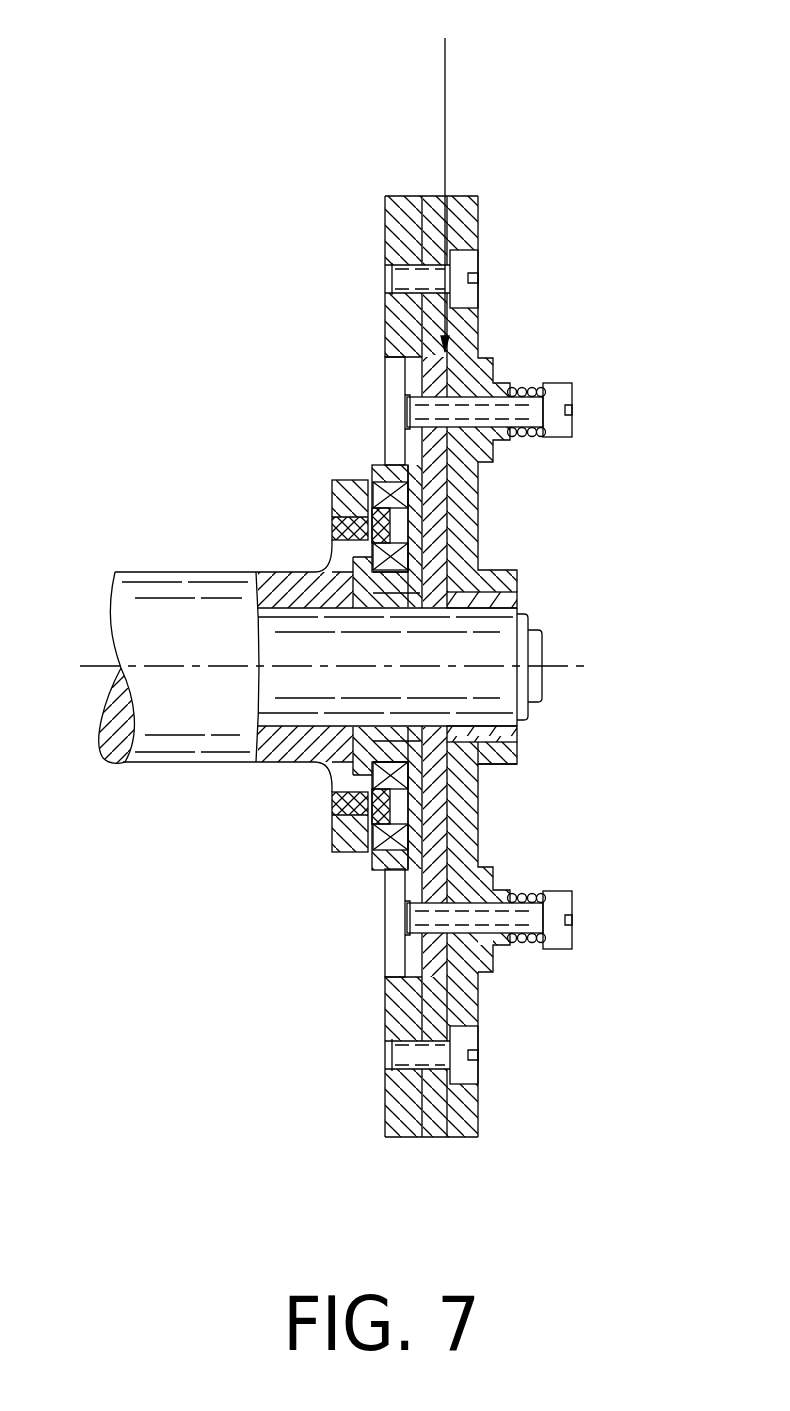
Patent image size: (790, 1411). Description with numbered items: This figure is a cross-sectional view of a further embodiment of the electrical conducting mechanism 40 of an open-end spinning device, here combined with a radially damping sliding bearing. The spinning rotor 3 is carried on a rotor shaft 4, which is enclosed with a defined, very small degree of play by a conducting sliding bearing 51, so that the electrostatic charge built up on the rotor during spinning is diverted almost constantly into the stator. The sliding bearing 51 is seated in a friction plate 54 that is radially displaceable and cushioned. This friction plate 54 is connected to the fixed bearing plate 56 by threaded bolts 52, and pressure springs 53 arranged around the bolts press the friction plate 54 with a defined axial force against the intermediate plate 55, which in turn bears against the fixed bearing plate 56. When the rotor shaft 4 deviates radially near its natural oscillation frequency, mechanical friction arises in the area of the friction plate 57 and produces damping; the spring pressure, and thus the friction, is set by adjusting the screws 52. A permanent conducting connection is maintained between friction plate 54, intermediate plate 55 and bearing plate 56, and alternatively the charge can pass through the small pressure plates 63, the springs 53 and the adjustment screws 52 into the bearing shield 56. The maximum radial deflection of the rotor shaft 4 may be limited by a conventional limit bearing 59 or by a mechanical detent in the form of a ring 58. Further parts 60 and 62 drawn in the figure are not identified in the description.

The spinning rotor 3 is at (175, 609).
The rotor shaft 4 is at (203, 720).
The electrical conducting mechanism 40 is at (538, 797).
The sliding bearing 51 is at (498, 600).
The threaded bolts 52 is at (563, 440).
The pressure springs 53 is at (520, 383).
The friction plate 54 is at (498, 752).
The intermediate plate 55 is at (435, 535).
The bearing plate 56 is at (400, 1117).
The friction plate area 57 is at (445, 178).
The ring 58 is at (472, 242).
The limit bearing 59 is at (330, 778).
The upper seal housing 60 is at (343, 525).
The bearing 62 is at (378, 528).
The small pressure plates 63 is at (495, 972).